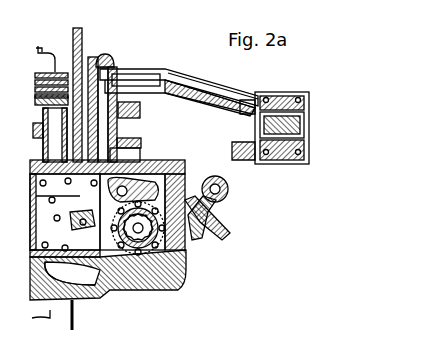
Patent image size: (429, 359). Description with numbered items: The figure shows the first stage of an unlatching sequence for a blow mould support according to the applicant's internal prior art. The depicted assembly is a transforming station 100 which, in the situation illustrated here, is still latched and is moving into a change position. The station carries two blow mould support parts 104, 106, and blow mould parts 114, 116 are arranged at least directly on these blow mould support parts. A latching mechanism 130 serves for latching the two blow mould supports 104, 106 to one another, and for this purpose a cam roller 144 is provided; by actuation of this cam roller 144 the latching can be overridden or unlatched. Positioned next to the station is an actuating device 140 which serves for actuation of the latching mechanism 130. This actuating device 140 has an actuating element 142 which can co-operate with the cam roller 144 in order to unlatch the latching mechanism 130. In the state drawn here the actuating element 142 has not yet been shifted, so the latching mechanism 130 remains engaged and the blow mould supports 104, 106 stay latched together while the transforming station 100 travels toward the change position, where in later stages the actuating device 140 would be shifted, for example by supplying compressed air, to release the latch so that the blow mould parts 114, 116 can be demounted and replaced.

The transforming station 100 is at (288, 243).
The blow mould support part 104 is at (170, 264).
The blow mould support part 106 is at (168, 188).
The blow mould part 114 is at (216, 238).
The blow mould part 116 is at (148, 178).
The latching mechanism 130 is at (277, 237).
The actuating device 140 is at (328, 153).
The actuating element 142 is at (278, 120).
The cam roller 144 is at (229, 192).